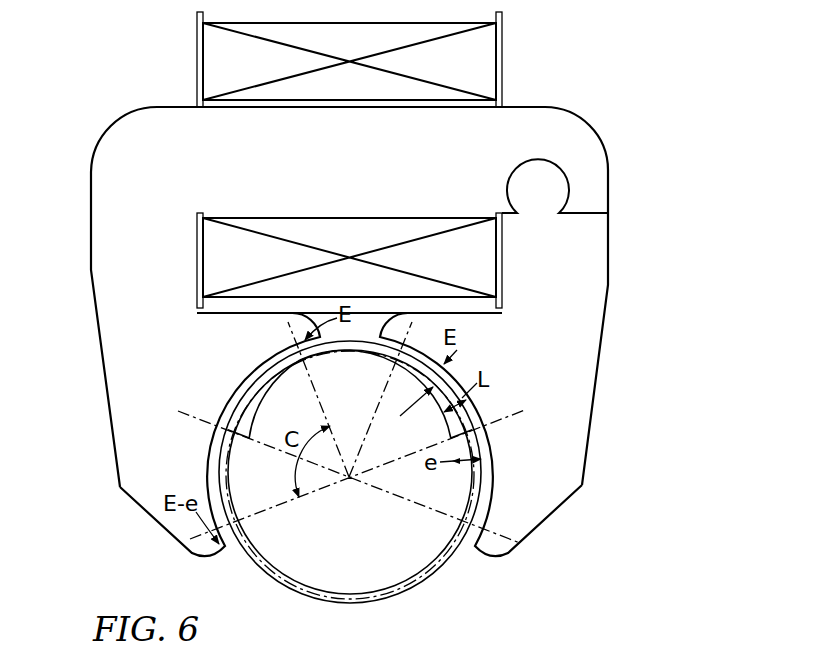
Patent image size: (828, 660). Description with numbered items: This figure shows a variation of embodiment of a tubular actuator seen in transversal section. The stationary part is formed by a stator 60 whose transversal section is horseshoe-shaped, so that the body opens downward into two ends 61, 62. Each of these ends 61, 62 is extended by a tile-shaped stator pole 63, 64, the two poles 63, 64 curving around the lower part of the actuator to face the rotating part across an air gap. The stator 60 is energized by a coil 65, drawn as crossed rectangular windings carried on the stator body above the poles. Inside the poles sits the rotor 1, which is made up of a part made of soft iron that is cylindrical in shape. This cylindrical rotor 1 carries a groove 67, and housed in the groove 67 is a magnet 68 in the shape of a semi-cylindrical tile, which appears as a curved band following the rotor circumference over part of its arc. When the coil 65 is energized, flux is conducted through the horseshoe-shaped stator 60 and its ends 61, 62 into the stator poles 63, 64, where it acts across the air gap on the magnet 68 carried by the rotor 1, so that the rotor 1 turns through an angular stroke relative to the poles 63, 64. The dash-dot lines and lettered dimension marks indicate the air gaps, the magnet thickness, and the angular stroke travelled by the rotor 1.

The rotor 1 is at (466, 568).
The stator 60 is at (384, 284).
The stator end 61 is at (600, 272).
The stator end 62 is at (112, 322).
The stator pole 63 is at (160, 461).
The stator pole 64 is at (540, 460).
The coil 65 is at (497, 60).
The groove 67 is at (265, 418).
The magnet 68 is at (240, 392).